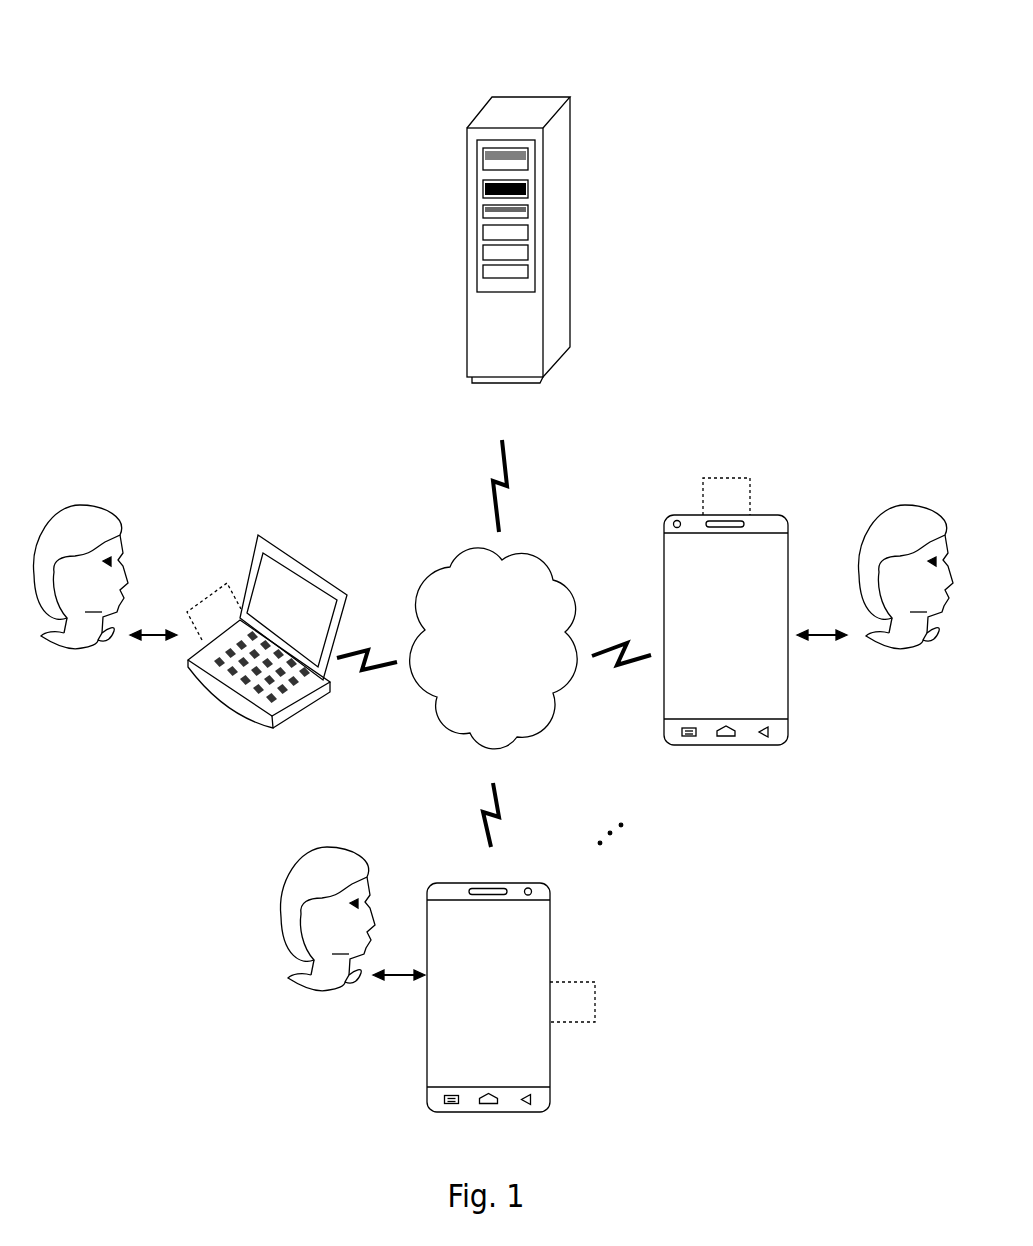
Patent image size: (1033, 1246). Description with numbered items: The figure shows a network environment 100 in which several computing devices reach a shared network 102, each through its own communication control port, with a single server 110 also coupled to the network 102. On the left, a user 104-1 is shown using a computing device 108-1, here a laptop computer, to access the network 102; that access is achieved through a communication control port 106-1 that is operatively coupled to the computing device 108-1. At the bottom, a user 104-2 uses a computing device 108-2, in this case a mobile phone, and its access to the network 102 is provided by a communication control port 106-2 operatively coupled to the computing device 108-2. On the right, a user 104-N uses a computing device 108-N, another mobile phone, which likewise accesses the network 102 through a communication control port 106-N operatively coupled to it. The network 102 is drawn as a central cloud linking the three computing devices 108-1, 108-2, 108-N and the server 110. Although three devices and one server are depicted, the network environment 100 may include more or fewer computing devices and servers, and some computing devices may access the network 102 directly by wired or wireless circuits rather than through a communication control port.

The network environment 100 is at (202, 52).
The network 102 is at (482, 670).
The user 104-1 is at (60, 703).
The user 104-2 is at (300, 1045).
The user 104-N is at (876, 705).
The communication control port 106-1 is at (197, 599).
The communication control port 106-2 is at (573, 970).
The communication control port 106-N is at (725, 468).
The computing device 108-1 is at (244, 780).
The computing device 108-2 is at (466, 1031).
The computing device 108-N is at (704, 666).
The server 110 is at (492, 435).